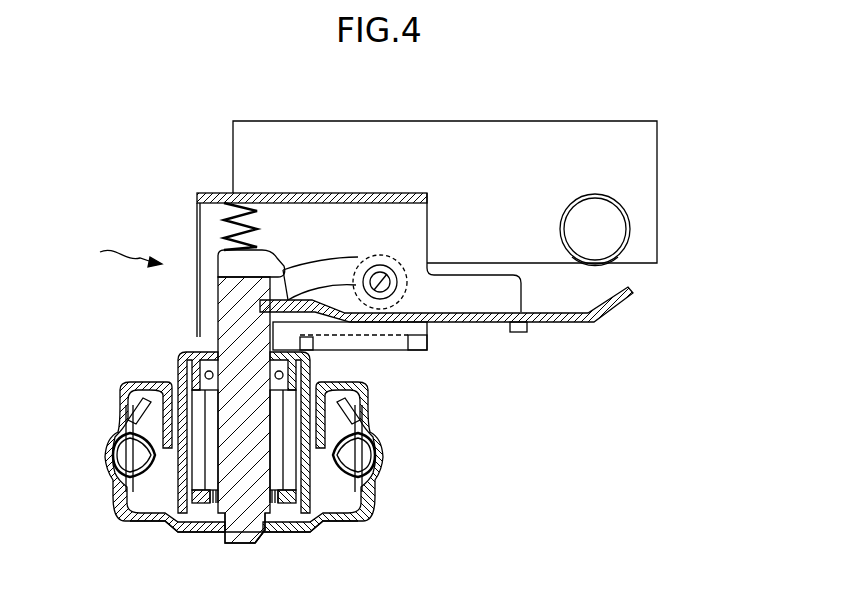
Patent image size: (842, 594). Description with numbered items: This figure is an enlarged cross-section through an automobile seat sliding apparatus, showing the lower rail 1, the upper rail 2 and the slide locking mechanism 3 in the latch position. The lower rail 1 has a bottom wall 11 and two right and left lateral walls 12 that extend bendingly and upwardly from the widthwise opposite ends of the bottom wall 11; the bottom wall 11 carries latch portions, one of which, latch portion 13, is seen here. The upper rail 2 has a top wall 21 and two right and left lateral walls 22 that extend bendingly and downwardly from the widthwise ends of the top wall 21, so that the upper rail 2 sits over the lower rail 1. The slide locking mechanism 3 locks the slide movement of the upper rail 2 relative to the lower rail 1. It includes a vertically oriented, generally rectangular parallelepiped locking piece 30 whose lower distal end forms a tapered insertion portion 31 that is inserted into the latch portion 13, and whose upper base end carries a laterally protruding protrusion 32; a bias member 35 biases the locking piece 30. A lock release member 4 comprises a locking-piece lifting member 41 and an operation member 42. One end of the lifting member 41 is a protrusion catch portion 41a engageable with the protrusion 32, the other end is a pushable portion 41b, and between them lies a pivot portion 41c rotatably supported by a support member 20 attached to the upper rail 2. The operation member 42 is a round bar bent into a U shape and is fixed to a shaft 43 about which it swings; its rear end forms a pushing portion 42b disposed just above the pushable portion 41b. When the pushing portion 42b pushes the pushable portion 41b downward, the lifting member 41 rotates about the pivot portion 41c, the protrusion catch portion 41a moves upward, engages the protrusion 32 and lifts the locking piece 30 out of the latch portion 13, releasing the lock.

The lower rail 1 is at (246, 477).
The upper rail 2 is at (243, 323).
The slide locking mechanism 3 is at (122, 255).
The lock release member 4 is at (466, 268).
The bottom wall 11 is at (312, 534).
The lateral walls 12 is at (117, 428).
The latch portion 13 is at (267, 527).
The support member 20 is at (208, 192).
The top wall 21 is at (200, 343).
The lateral walls 22 is at (400, 376).
The locking piece 30 is at (181, 430).
The insertion portion 31 is at (237, 532).
The protrusion 32 is at (263, 292).
The bias member 35 is at (228, 242).
The locking-piece lifting member 41 is at (466, 248).
The protrusion catch portion 41a is at (287, 300).
The pushable portion 41b is at (627, 302).
The pivot portion 41c is at (388, 272).
The operation member 42 is at (631, 313).
The pushing portion 42b is at (602, 265).
The shaft 43 is at (607, 121).